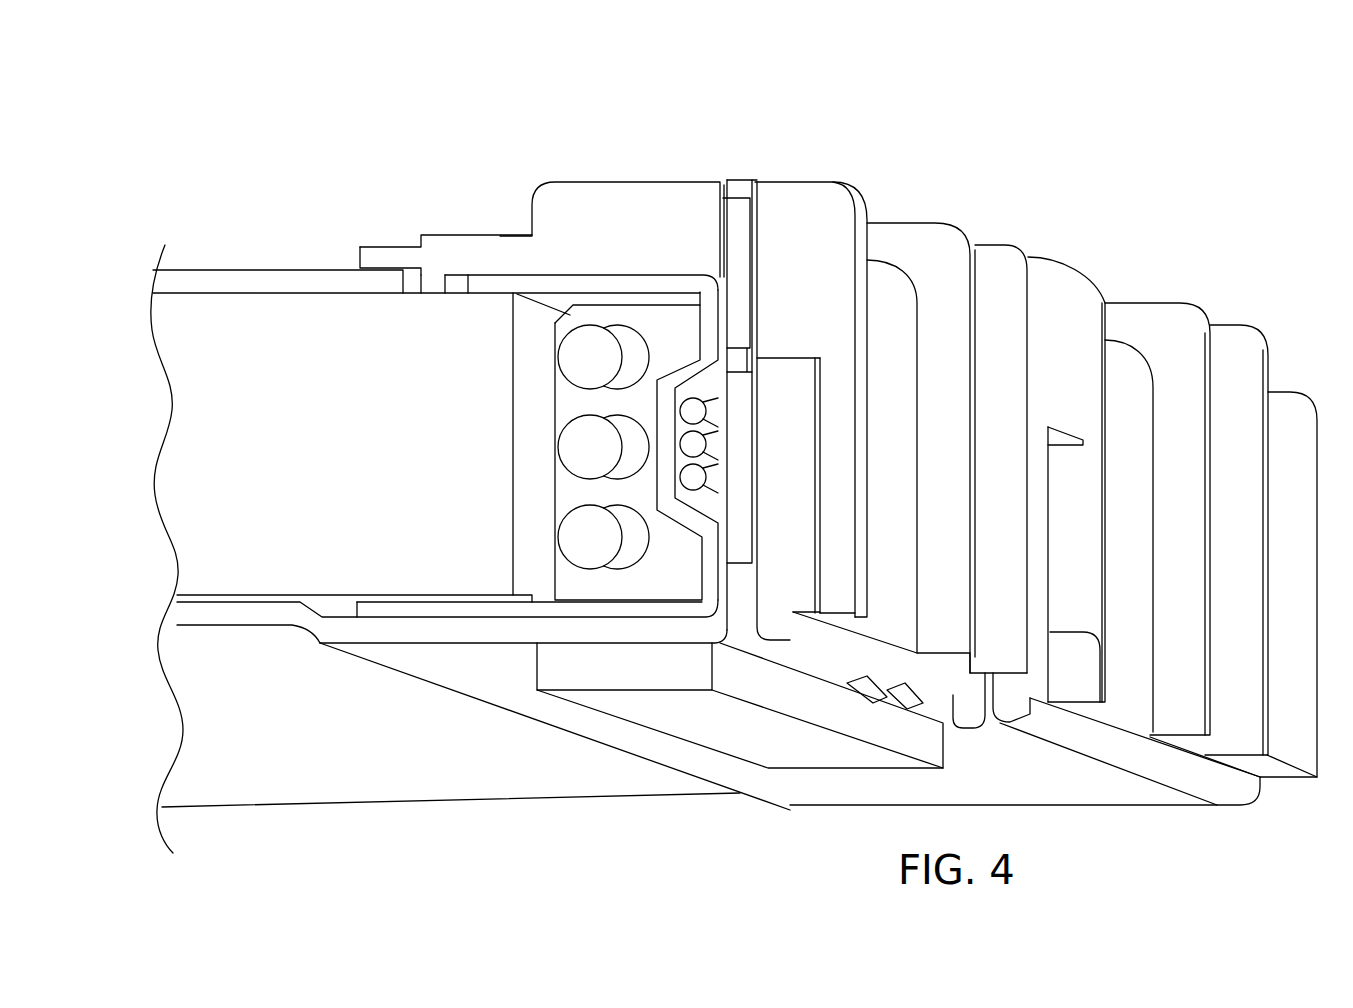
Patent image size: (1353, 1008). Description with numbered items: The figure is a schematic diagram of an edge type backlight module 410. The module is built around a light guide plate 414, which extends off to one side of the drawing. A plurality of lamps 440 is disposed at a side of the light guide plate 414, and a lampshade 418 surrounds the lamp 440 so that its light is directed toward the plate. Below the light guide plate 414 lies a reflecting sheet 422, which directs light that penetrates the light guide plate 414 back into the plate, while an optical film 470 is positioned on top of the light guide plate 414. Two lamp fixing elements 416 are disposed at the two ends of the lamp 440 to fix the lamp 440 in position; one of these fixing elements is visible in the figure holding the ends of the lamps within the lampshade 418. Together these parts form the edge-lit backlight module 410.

The edge type backlight module 410 is at (507, 123).
The light guide plate 414 is at (293, 355).
The lamp fixing element 416 is at (663, 577).
The lampshade 418 is at (680, 287).
The reflecting sheet 422 is at (337, 595).
The lamp 440 is at (583, 353).
The optical film 470 is at (325, 282).